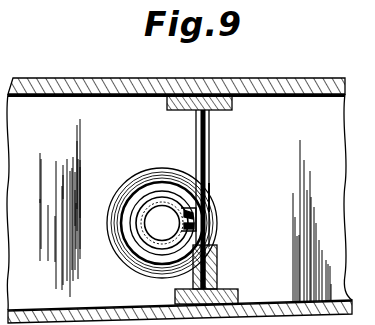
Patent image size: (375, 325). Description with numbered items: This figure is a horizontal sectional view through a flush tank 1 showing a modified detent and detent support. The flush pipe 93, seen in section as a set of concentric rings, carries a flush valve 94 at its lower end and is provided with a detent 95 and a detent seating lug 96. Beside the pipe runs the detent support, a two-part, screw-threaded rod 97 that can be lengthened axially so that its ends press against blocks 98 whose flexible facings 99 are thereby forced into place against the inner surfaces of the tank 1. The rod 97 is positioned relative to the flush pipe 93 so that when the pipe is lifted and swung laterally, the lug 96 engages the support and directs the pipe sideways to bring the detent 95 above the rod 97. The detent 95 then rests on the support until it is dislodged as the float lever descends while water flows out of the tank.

The housing 1 is at (254, 75).
The flush pipe 93 is at (145, 228).
The flush valve 94 is at (169, 189).
The detent 95 is at (209, 193).
The detent seating lug 96 is at (197, 215).
The two-part, screw-threaded rod 97 is at (209, 135).
The blocks 98 is at (174, 111).
The flexible facings 99 is at (237, 94).